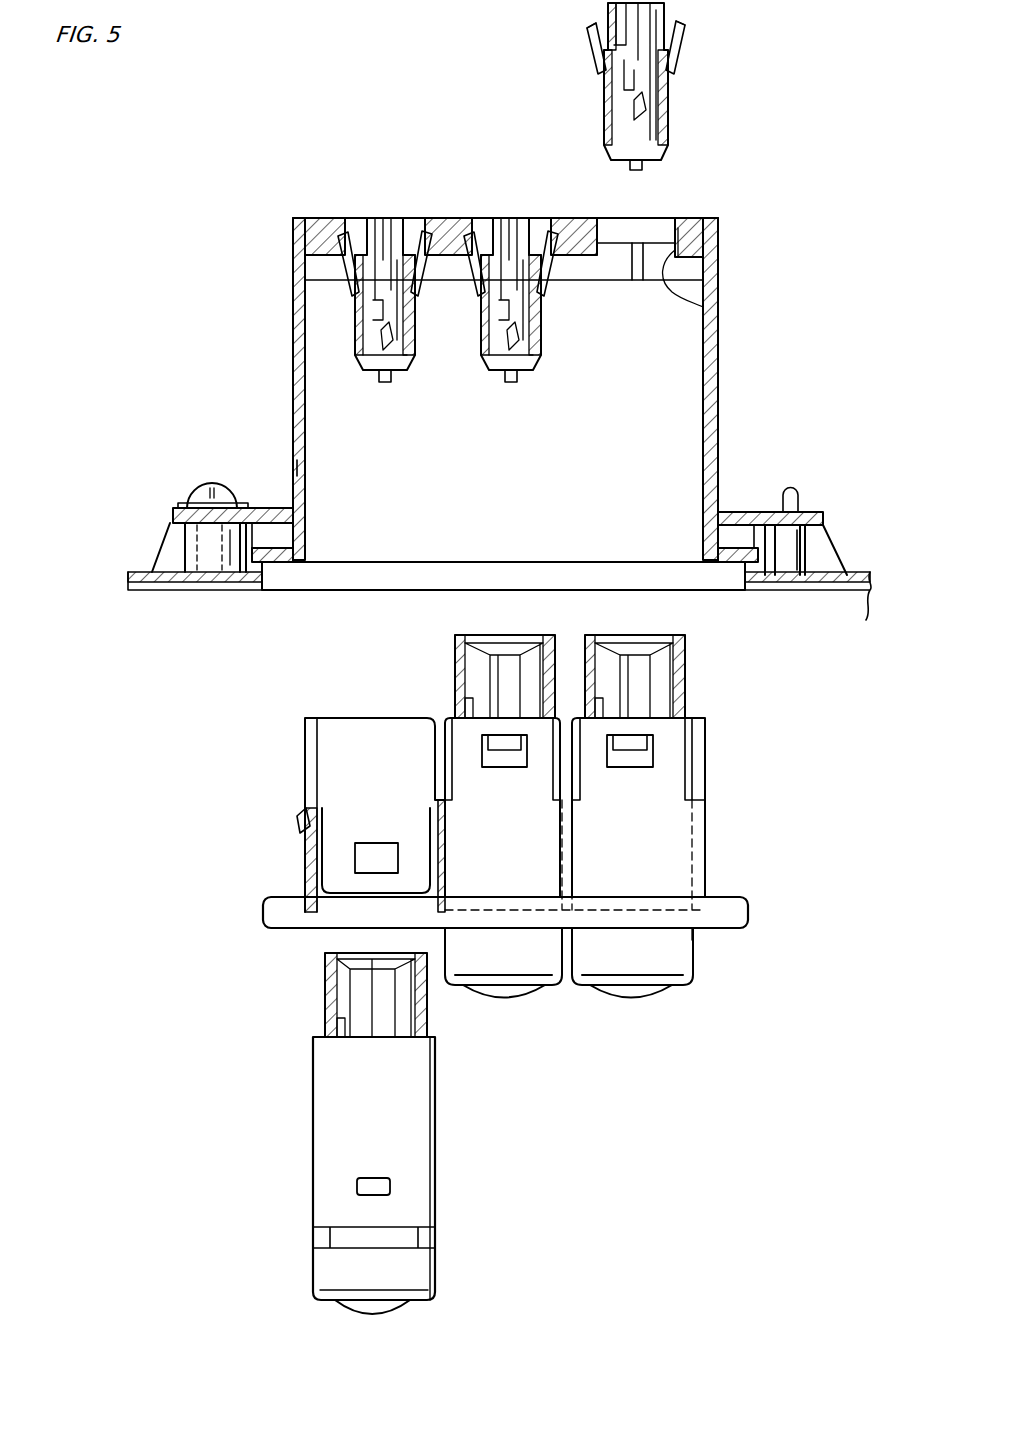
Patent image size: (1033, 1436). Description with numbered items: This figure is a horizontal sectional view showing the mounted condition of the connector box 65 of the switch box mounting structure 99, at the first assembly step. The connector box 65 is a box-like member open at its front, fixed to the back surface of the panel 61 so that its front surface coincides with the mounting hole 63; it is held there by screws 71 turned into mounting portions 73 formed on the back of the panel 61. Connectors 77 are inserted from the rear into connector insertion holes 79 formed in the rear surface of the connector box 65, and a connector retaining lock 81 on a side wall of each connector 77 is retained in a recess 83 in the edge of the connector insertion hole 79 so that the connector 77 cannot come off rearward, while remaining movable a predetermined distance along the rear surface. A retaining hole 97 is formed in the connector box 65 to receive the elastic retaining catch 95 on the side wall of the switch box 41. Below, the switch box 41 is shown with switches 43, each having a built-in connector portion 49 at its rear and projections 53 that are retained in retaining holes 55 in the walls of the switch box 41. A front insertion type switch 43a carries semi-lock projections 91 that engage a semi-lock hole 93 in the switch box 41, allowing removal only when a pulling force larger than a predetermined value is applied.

The switch box 41 is at (255, 912).
The switch 43 is at (655, 871).
The front insertion type switch 43a is at (437, 1137).
The built-in connector portion 49 is at (687, 672).
The projection 53 is at (630, 750).
The retaining hole 55 is at (640, 770).
The panel 61 is at (852, 598).
The mounting hole 63 is at (290, 578).
The connector box 65 is at (290, 360).
The screw 71 is at (193, 492).
The mounting portion 73 is at (165, 528).
The connector 77 is at (678, 106).
The connector insertion hole 79 is at (657, 232).
The connector retaining lock 81 is at (684, 32).
The recess 83 is at (703, 307).
The semi-lock projection 91 is at (355, 1186).
The semi-lock hole 93 is at (378, 843).
The elastic retaining catch 95 is at (300, 826).
The retaining hole 97 is at (293, 468).
The switch box mounting structure 99 is at (469, 148).